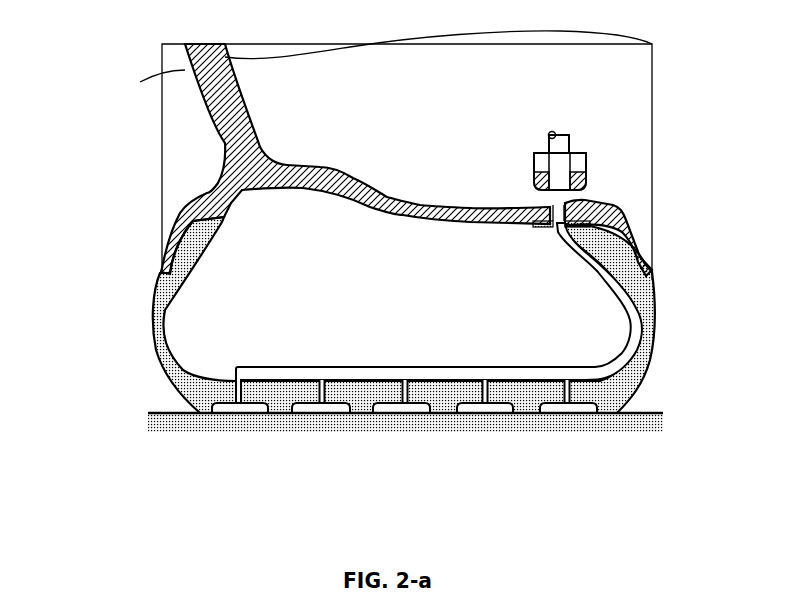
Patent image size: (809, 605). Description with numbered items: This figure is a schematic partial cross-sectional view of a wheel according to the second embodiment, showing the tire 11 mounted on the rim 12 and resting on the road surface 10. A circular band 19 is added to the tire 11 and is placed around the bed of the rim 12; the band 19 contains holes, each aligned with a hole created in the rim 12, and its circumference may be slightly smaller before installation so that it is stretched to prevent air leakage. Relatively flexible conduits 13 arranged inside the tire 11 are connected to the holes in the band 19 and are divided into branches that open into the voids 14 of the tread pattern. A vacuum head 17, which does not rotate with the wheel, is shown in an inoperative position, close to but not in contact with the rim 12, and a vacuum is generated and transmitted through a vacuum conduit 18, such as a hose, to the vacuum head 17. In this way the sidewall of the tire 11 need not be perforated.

The road surface 10 is at (645, 418).
The tire 11 is at (152, 293).
The rim 12 is at (193, 70).
The conduits 13 is at (630, 317).
The voids 14 is at (569, 410).
The vacuum head 17 is at (533, 175).
The vacuum conduit 18 is at (557, 147).
The circular band 19 is at (548, 228).